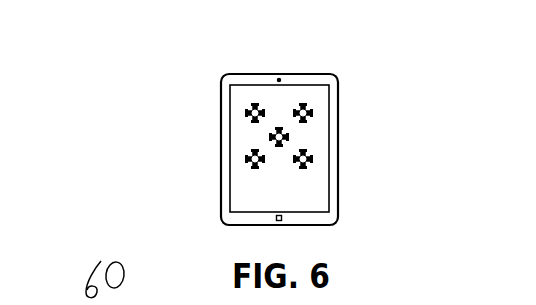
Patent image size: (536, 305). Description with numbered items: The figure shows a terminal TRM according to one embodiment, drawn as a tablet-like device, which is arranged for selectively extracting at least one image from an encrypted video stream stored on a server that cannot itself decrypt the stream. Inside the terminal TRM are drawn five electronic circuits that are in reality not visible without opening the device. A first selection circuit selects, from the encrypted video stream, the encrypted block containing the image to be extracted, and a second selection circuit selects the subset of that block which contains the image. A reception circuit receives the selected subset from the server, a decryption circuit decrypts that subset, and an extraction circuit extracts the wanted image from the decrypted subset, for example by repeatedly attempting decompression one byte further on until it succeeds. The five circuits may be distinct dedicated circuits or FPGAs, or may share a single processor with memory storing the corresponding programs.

The terminal TRM is at (217, 200).